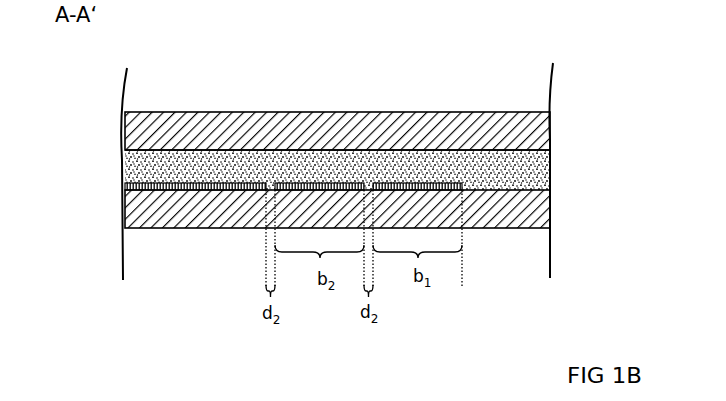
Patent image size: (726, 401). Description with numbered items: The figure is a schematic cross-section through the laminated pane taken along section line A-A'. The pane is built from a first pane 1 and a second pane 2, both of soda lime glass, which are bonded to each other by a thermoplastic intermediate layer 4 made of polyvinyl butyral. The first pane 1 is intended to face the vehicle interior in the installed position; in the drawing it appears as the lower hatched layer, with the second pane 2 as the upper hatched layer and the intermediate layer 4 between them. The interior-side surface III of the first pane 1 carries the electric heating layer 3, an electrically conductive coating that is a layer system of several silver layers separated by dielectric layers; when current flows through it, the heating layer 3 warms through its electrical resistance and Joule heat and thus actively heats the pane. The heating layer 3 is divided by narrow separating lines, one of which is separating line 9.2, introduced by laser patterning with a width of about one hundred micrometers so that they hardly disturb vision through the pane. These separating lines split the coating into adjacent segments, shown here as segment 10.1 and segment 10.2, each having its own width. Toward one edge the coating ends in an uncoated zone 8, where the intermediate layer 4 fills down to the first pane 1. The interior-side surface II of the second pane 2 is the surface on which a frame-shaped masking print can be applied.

The first pane 1 is at (520, 213).
The second pane 2 is at (482, 127).
The electric heating layer 3 is at (250, 122).
The thermoplastic intermediate layer 4 is at (520, 165).
The uncoated zone 8 is at (470, 170).
The separating line 9.2 is at (268, 175).
The segment 10.1 is at (405, 175).
The segment 10.2 is at (321, 173).
The surface of the first pane III is at (548, 152).
The surface of the second pane II is at (535, 184).